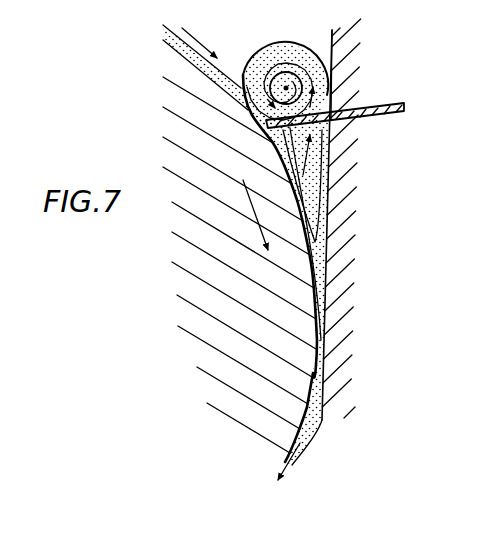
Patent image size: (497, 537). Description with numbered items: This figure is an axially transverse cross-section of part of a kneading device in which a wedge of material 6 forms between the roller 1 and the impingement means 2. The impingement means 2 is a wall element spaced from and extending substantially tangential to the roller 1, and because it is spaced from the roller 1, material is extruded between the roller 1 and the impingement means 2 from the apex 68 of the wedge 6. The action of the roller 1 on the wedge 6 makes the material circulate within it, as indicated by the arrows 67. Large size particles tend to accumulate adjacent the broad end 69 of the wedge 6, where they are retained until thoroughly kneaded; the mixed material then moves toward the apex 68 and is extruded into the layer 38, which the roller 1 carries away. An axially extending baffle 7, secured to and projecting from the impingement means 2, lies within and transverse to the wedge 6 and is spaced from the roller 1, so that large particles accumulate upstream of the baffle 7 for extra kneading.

The roller 1 is at (237, 370).
The impingement means 2 is at (345, 354).
The wedge of material 6 is at (333, 33).
The baffle 7 is at (402, 112).
The layer 38 is at (306, 428).
The arrows 67 is at (310, 220).
The apex of the wedge 68 is at (318, 310).
The broad end of the wedge 69 is at (272, 46).